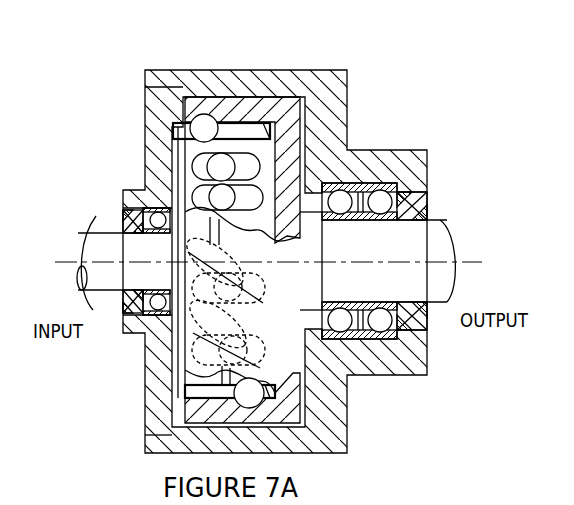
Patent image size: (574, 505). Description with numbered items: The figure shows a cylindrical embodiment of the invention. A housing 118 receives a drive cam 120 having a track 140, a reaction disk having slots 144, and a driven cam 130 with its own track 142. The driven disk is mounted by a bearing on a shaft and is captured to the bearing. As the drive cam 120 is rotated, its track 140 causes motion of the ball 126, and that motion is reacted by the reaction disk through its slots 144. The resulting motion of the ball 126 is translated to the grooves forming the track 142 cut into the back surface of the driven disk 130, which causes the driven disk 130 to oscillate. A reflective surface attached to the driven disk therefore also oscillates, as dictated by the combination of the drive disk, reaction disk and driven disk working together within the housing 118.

The housing 118 is at (275, 231).
The drive cam 120 is at (146, 270).
The ball 126 is at (143, 132).
The driven cam 130 is at (392, 221).
The track 140 is at (248, 208).
The track 142 is at (157, 260).
The slots 144 is at (315, 243).